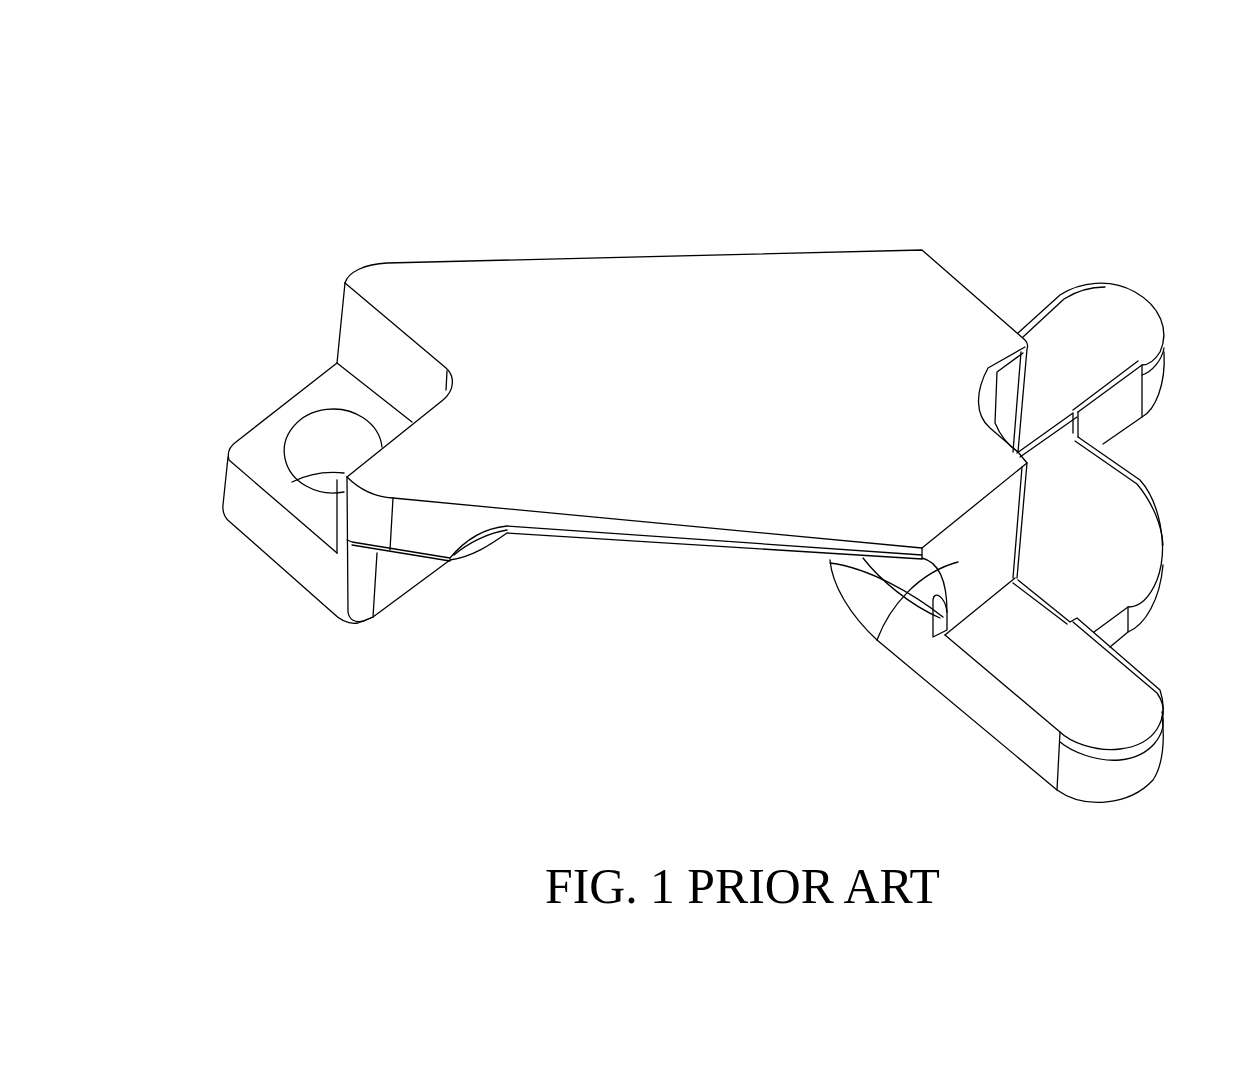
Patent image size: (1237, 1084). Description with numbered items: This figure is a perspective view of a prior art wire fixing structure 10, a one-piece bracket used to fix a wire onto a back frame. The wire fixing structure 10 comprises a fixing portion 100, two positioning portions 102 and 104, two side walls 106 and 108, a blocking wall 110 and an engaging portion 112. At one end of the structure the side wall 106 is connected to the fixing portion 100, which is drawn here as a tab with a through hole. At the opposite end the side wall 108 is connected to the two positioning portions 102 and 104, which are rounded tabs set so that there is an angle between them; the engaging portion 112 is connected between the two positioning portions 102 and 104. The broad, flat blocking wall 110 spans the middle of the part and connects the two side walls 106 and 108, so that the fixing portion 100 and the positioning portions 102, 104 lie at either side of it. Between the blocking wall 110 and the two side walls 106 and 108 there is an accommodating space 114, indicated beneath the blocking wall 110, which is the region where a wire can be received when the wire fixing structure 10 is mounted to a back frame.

The wire fixing structure 10 is at (944, 173).
The fixing portion 100 is at (263, 445).
The positioning portion 102 is at (1115, 707).
The positioning portion 104 is at (1113, 322).
The side wall 106 is at (360, 332).
The side wall 108 is at (855, 558).
The blocking wall 110 is at (538, 277).
The engaging portion 112 is at (1113, 522).
The accommodating space 114 is at (587, 575).